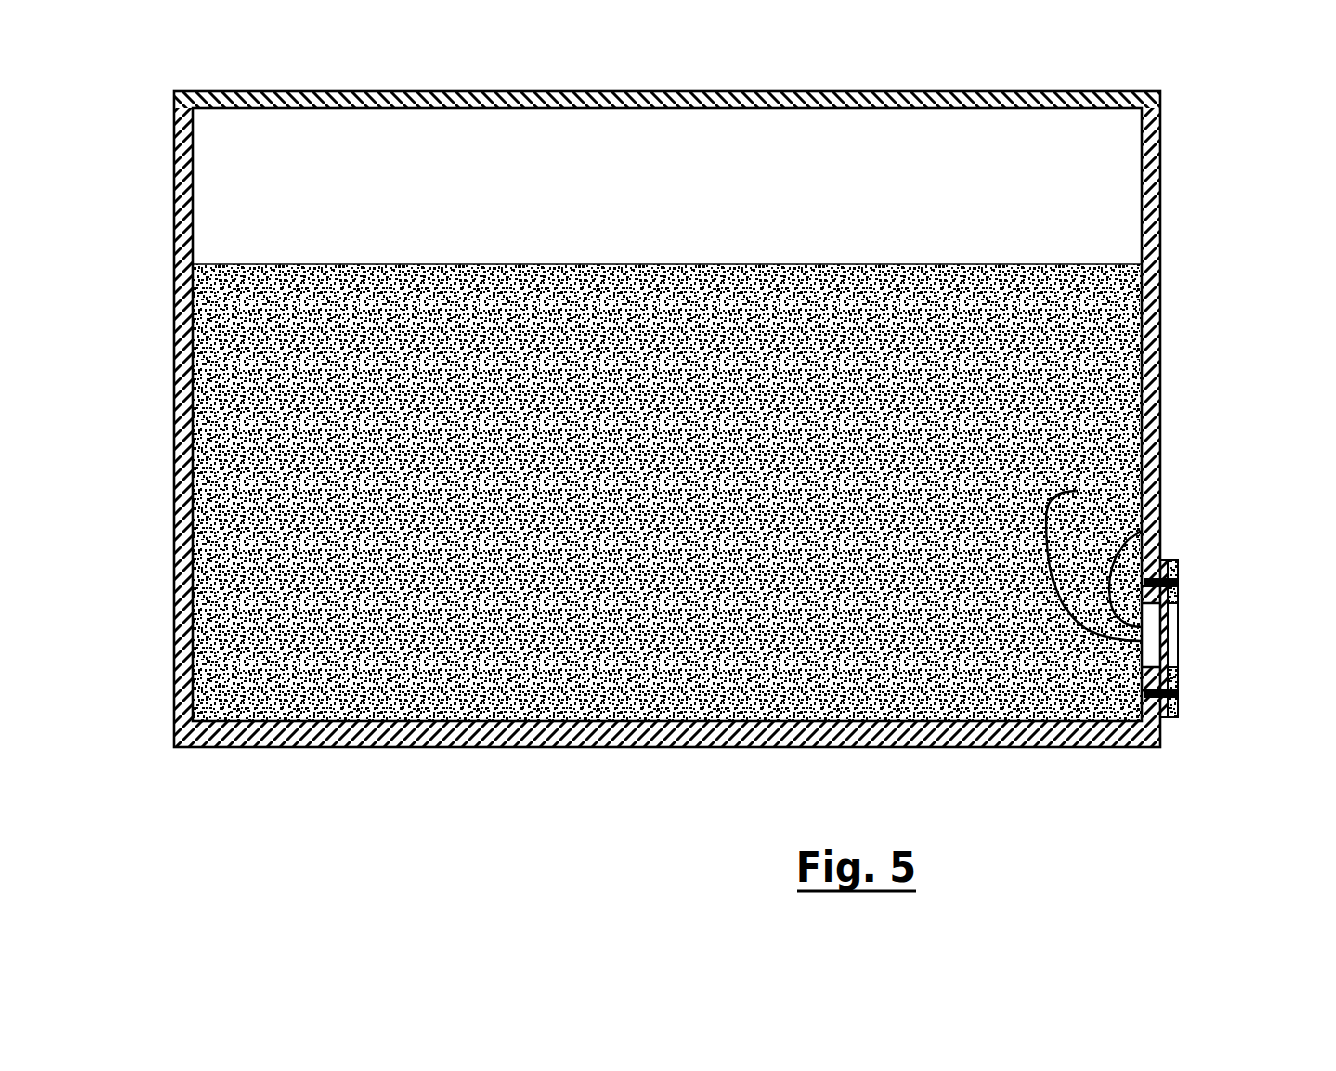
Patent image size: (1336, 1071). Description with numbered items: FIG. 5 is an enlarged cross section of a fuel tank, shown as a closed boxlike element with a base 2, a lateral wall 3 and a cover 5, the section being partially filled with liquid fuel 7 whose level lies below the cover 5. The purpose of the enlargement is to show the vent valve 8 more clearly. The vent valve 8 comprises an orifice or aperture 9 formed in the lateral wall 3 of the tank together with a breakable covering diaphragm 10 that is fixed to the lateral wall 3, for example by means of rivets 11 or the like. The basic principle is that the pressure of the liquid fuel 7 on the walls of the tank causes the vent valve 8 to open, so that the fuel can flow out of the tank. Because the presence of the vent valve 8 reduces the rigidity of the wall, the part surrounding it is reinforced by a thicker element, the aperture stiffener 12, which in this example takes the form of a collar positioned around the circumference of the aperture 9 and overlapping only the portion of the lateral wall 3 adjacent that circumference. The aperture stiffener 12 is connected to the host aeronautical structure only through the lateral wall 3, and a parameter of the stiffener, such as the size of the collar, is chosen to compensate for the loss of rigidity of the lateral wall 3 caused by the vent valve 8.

The base 2 is at (623, 747).
The lateral wall 3 is at (1160, 389).
The cover 5 is at (627, 92).
The liquid fuel 7 is at (771, 533).
The vent valve 8 is at (1236, 623).
The aperture 9 is at (1078, 491).
The breakable covering diaphragm 10 is at (1142, 531).
The rivets 11 is at (1179, 690).
The aperture stiffener 12 is at (1172, 717).